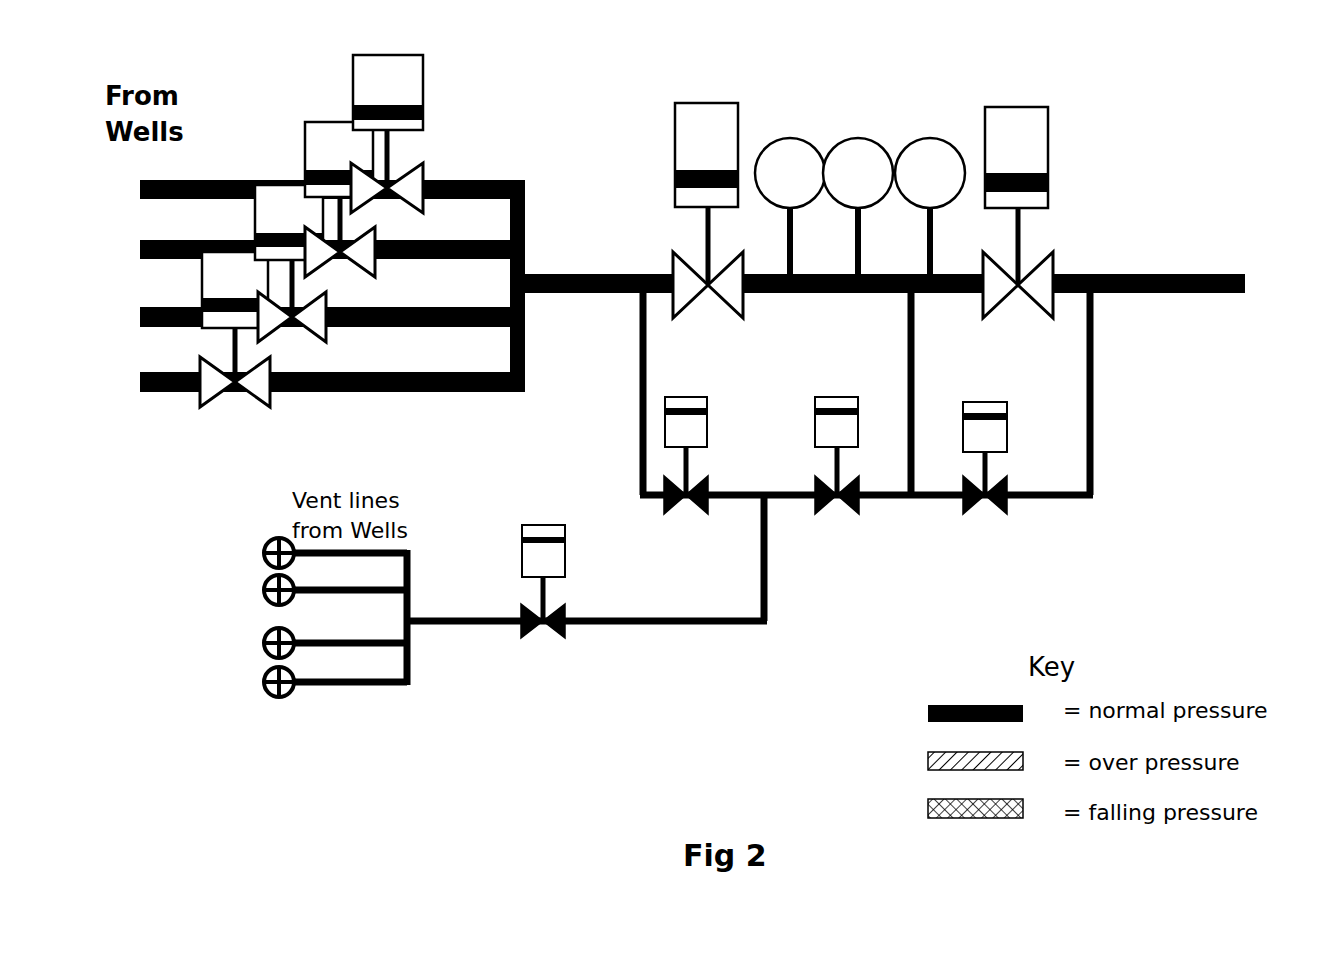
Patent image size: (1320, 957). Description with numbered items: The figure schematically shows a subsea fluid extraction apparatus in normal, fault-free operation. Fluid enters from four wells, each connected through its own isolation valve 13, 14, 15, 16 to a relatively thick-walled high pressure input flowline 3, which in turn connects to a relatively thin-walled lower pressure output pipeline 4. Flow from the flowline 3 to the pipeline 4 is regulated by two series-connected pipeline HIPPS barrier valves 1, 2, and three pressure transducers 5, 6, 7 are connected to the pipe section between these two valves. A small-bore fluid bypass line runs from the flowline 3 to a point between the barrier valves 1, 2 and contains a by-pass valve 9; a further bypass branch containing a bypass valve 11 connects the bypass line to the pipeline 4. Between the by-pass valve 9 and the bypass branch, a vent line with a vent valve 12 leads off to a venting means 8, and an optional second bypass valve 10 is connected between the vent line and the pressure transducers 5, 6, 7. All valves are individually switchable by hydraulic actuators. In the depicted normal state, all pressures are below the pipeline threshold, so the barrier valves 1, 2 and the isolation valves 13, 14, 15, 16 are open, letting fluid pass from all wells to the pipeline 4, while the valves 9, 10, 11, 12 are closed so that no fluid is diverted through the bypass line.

The pipeline HIPPS barrier valve 1 is at (706, 292).
The pipeline HIPPS barrier valve 2 is at (1018, 296).
The high pressure fluid extraction input flowline 3 is at (582, 295).
The lower pressure output pipeline 4 is at (1177, 294).
The pressure transducer 5 is at (797, 158).
The pressure transducer 6 is at (858, 158).
The pressure transducer 7 is at (930, 158).
The venting means 8 is at (268, 541).
The by-pass valve 9 is at (686, 502).
The second bypass valve 10 is at (837, 502).
The bypass valve 11 is at (983, 503).
The vent valve 12 is at (543, 636).
The isolation valve 13 is at (240, 395).
The isolation valve 14 is at (290, 330).
The isolation valve 15 is at (345, 268).
The isolation valve 16 is at (392, 205).